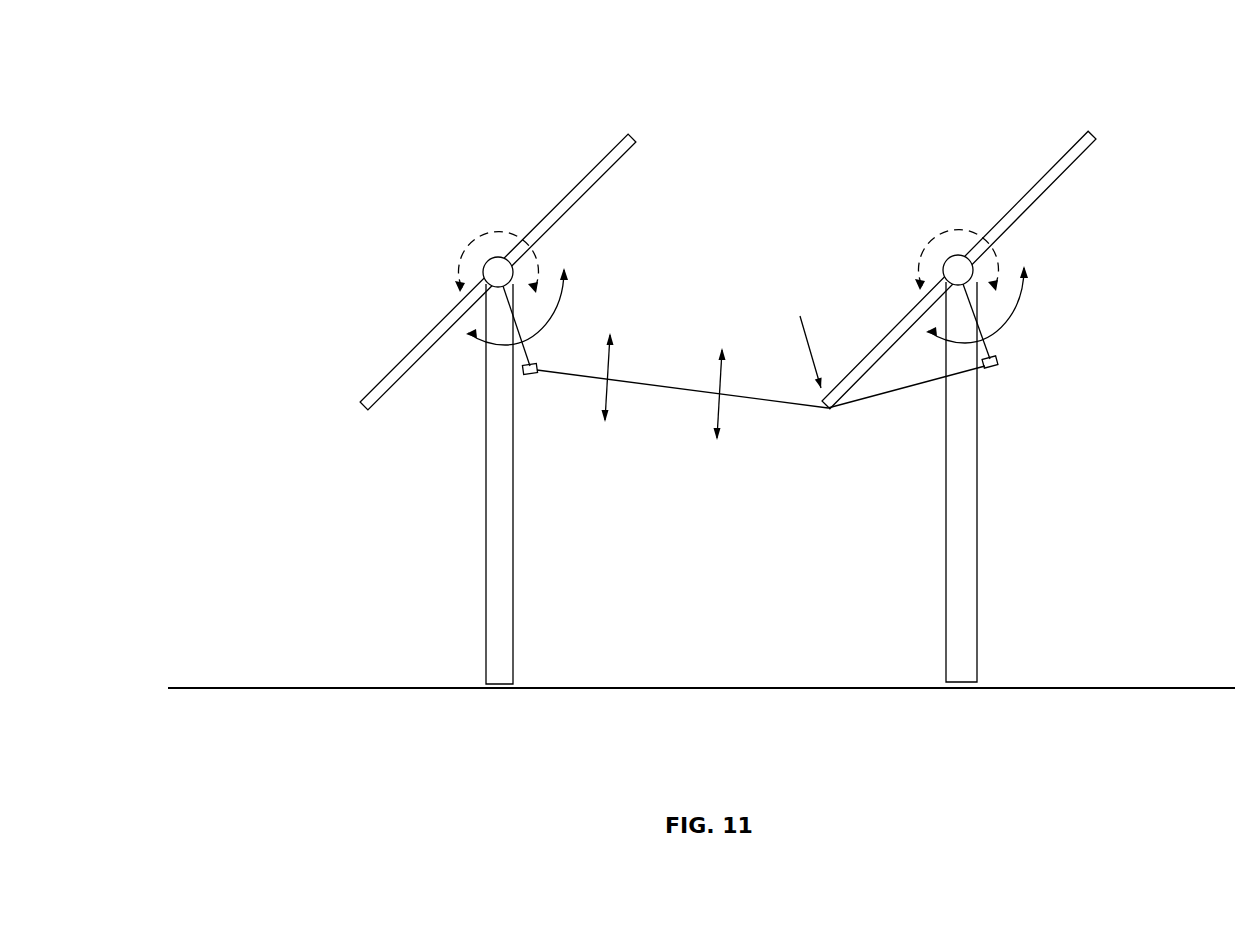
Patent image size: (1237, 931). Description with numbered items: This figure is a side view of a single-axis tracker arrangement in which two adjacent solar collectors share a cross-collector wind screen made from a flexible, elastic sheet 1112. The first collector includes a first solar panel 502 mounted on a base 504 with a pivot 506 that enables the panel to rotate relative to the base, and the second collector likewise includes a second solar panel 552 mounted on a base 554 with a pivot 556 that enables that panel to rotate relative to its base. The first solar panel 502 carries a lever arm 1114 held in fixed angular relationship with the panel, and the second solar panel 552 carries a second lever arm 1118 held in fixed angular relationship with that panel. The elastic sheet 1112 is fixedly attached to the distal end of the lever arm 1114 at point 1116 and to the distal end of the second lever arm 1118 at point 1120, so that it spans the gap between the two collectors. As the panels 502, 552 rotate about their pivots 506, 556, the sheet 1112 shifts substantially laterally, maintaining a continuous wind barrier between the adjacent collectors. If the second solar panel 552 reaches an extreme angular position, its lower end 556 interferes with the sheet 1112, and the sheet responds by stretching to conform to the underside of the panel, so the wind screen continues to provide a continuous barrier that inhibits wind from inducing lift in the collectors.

The first solar panel 502 is at (418, 345).
The base 504 is at (486, 553).
The pivot 506 is at (475, 245).
The second solar panel 552 is at (1065, 156).
The base 554 is at (946, 637).
The pivot 556 is at (977, 274).
The elastic sheet 1112 is at (642, 381).
The lever arm 1114 is at (528, 347).
The point 1116 is at (528, 380).
The second lever arm 1118 is at (985, 345).
The point 1120 is at (993, 366).